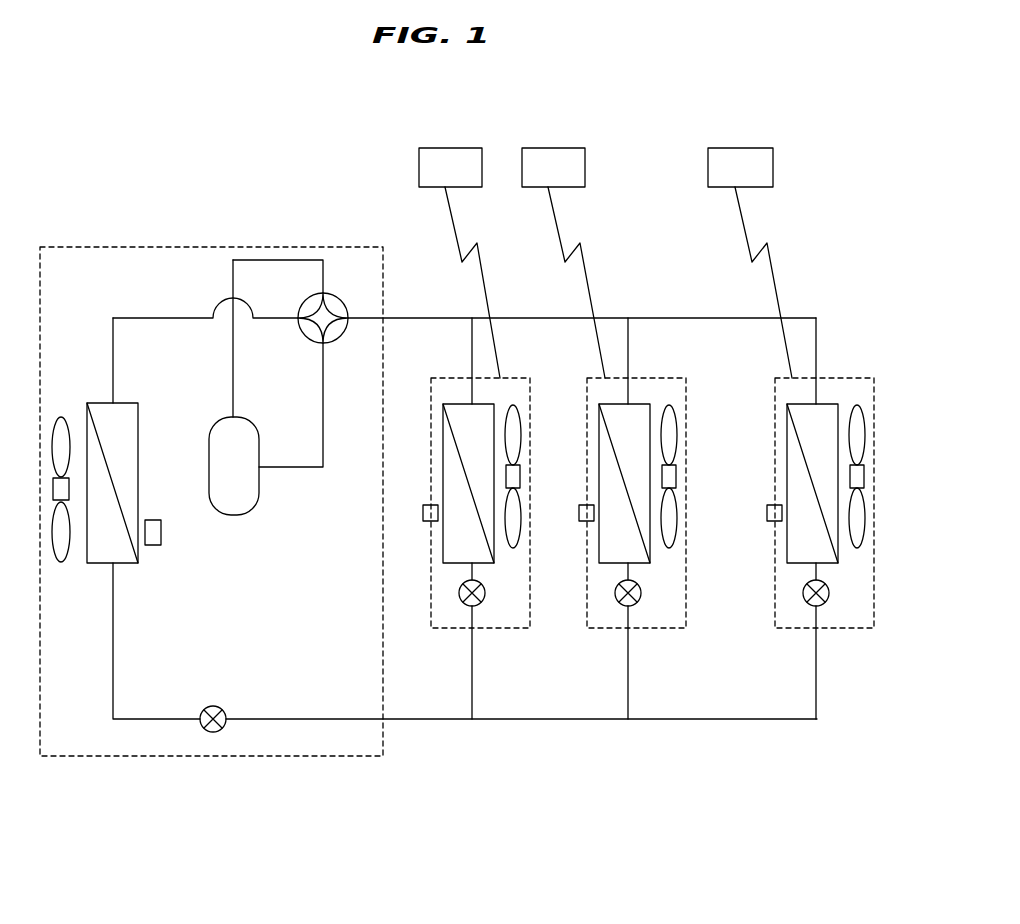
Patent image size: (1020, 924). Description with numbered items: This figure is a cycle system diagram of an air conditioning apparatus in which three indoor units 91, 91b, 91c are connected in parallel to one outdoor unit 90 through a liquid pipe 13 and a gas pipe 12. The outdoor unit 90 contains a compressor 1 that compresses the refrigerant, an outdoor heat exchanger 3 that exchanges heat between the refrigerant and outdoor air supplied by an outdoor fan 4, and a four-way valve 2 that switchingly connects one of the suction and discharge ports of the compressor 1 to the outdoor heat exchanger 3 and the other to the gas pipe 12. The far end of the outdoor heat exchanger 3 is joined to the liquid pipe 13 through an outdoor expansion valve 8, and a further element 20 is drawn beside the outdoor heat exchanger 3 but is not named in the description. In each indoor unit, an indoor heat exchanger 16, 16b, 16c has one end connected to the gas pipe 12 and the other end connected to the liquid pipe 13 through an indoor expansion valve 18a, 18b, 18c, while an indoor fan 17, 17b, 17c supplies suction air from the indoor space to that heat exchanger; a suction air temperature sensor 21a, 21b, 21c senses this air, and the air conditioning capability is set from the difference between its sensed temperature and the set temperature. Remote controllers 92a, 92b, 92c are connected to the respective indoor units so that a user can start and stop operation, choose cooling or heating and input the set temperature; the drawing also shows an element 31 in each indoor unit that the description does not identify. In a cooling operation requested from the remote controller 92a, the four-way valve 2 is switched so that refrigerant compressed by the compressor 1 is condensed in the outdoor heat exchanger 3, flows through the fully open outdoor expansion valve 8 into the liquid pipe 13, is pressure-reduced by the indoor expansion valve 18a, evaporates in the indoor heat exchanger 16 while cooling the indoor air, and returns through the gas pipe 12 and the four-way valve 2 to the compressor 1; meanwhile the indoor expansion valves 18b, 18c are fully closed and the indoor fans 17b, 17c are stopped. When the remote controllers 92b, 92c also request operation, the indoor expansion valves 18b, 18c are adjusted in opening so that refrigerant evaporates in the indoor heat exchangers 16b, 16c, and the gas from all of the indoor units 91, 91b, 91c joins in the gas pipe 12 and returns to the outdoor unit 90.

The compressor 1 is at (222, 417).
The four-way valve 2 is at (335, 297).
The outdoor heat exchanger 3 is at (125, 563).
The outdoor fan 4 is at (61, 563).
The outdoor expansion valve 8 is at (212, 733).
The gas pipe 12 is at (400, 318).
The liquid pipe 13 is at (406, 720).
The indoor heat exchanger 16 is at (443, 550).
The indoor heat exchanger 16b is at (652, 550).
The indoor heat exchanger 16c is at (787, 552).
The indoor fan 17 is at (513, 404).
The indoor fan 17b is at (669, 404).
The indoor fan 17c is at (857, 404).
The indoor expansion valve 18a is at (462, 600).
The indoor expansion valve 18b is at (620, 600).
The indoor expansion valve 18c is at (808, 600).
The outdoor temperature sensor 20 is at (161, 532).
The suction air temperature sensor 21a is at (423, 512).
The suction air temperature sensor 21b is at (580, 510).
The suction air temperature sensor 21c is at (767, 507).
The indoor control unit 31 is at (431, 420).
The outdoor unit 90 is at (323, 756).
The indoor unit 91 is at (497, 630).
The indoor unit 91b is at (664, 630).
The indoor unit 91c is at (850, 630).
The remote controller 92a is at (447, 148).
The remote controller 92b is at (548, 148).
The remote controller 92c is at (737, 148).